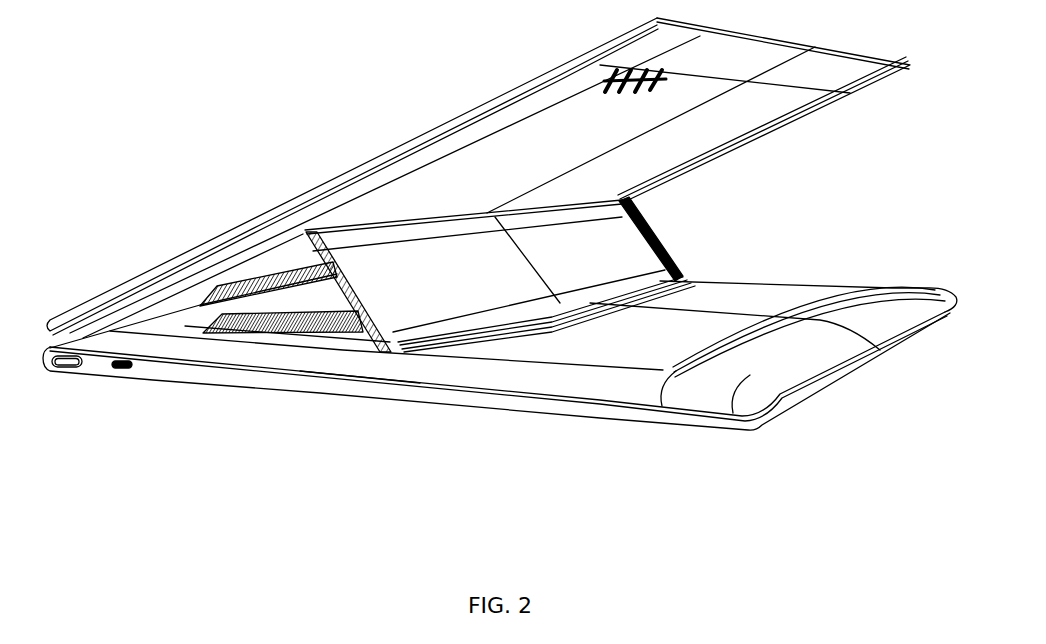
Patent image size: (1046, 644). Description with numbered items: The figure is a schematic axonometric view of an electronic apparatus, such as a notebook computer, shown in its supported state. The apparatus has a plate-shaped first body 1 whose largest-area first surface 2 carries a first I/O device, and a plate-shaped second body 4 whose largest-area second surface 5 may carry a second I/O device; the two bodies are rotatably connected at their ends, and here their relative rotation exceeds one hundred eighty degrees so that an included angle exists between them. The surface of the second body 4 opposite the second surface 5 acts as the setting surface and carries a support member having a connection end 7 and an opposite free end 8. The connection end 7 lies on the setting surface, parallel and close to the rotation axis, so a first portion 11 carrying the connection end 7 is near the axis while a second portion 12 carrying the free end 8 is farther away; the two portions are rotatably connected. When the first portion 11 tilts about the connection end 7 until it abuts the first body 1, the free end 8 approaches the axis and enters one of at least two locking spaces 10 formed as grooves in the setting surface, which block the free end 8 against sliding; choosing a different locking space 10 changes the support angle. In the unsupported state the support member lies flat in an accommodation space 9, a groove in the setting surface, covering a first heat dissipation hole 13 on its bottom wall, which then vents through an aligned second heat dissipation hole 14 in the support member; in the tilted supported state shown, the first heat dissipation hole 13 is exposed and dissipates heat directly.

The first body 1 is at (833, 110).
The first surface 2 is at (415, 130).
The second body 4 is at (855, 282).
The second surface 5 is at (600, 418).
The connection end 7 is at (137, 333).
The free end 8 is at (457, 350).
The accommodation space 9 is at (353, 355).
The locking space 10 is at (695, 278).
The first portion 11 is at (205, 275).
The second portion 12 is at (650, 230).
The first heat dissipation hole 13 is at (300, 342).
The second heat dissipation hole 14 is at (220, 308).